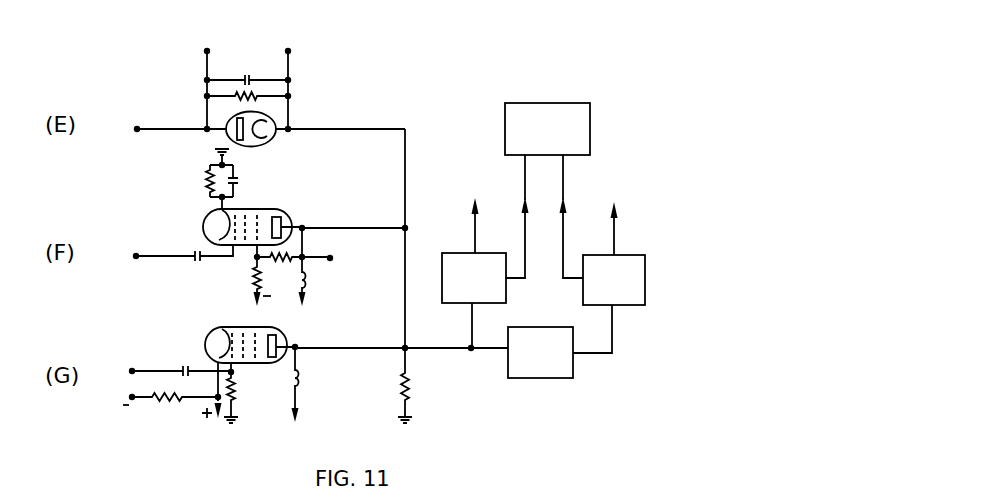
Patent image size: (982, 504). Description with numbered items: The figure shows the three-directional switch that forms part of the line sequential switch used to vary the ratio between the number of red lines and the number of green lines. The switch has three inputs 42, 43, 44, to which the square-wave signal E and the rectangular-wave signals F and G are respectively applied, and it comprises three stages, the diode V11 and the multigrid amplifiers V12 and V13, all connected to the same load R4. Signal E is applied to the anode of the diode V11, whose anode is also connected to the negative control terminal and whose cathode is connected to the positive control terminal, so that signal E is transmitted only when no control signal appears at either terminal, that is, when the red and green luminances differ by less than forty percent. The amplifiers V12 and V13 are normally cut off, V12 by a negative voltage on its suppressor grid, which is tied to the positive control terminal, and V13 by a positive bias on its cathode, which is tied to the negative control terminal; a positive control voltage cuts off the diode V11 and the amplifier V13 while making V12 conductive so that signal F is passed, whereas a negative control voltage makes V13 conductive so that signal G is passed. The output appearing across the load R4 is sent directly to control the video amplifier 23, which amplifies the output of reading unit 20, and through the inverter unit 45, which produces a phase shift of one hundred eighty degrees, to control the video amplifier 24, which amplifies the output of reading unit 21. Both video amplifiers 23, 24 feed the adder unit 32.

The input of the three-directional switch 42 is at (166, 126).
The input of the three-directional switch 43 is at (170, 255).
The input of the three-directional switch 44 is at (167, 372).
The reading unit 20 is at (472, 216).
The reading unit 21 is at (614, 219).
The video amplifier 23 is at (497, 288).
The video amplifier 24 is at (598, 298).
The adder unit 32 is at (547, 129).
The inverter unit 45 is at (542, 378).
The diode V11 is at (303, 98).
The multigrid amplifier V12 is at (305, 247).
The multigrid amplifier V13 is at (260, 367).
The load R4 is at (414, 385).